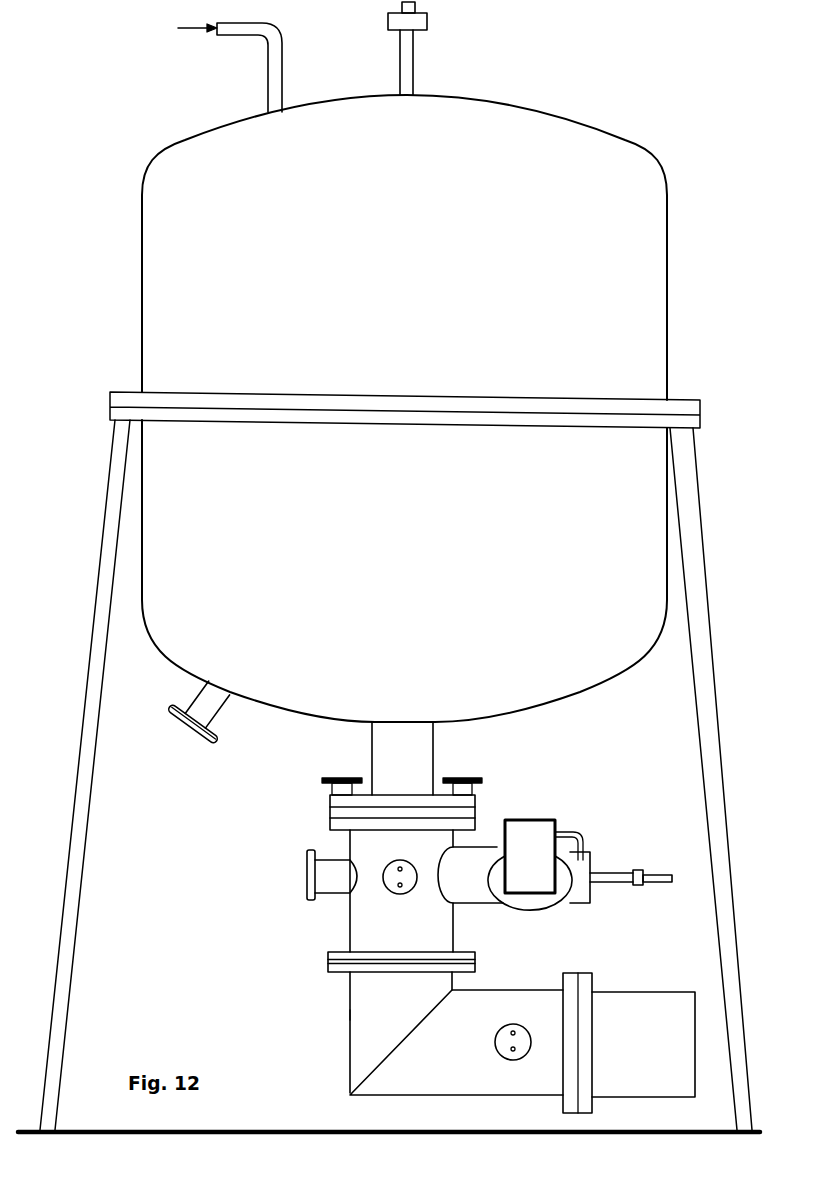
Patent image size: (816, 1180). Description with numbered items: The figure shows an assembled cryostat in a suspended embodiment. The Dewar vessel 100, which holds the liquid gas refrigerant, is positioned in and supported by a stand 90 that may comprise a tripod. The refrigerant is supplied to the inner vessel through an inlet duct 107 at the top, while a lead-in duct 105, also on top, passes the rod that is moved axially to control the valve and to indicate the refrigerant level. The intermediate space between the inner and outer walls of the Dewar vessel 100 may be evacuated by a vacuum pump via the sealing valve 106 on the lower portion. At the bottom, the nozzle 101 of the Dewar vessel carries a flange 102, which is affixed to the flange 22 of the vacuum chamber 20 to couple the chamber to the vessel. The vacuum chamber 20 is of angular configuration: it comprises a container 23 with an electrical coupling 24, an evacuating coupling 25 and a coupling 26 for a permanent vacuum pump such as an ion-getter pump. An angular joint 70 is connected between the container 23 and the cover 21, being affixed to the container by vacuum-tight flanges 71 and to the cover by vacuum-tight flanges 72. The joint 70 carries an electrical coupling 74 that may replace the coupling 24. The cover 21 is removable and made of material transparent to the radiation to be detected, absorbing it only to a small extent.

The Dewar vessel 100 is at (710, 308).
The stand 90 is at (100, 565).
The inlet duct 107 is at (282, 57).
The lead-in duct 105 is at (413, 60).
The sealing valve 106 is at (217, 707).
The nozzle 101 is at (471, 760).
The flange 102 is at (470, 805).
The flange 22 is at (330, 826).
The container 23 is at (450, 927).
The evacuating coupling 25 is at (307, 876).
The electrical coupling 24 is at (383, 882).
The coupling 26 is at (547, 826).
The flanges 71 is at (470, 970).
The angular joint 70 is at (357, 1065).
The vacuum chamber 20 is at (350, 1015).
The cover 21 is at (687, 1075).
The flanges 72 is at (582, 973).
The electrical coupling 74 is at (513, 1024).